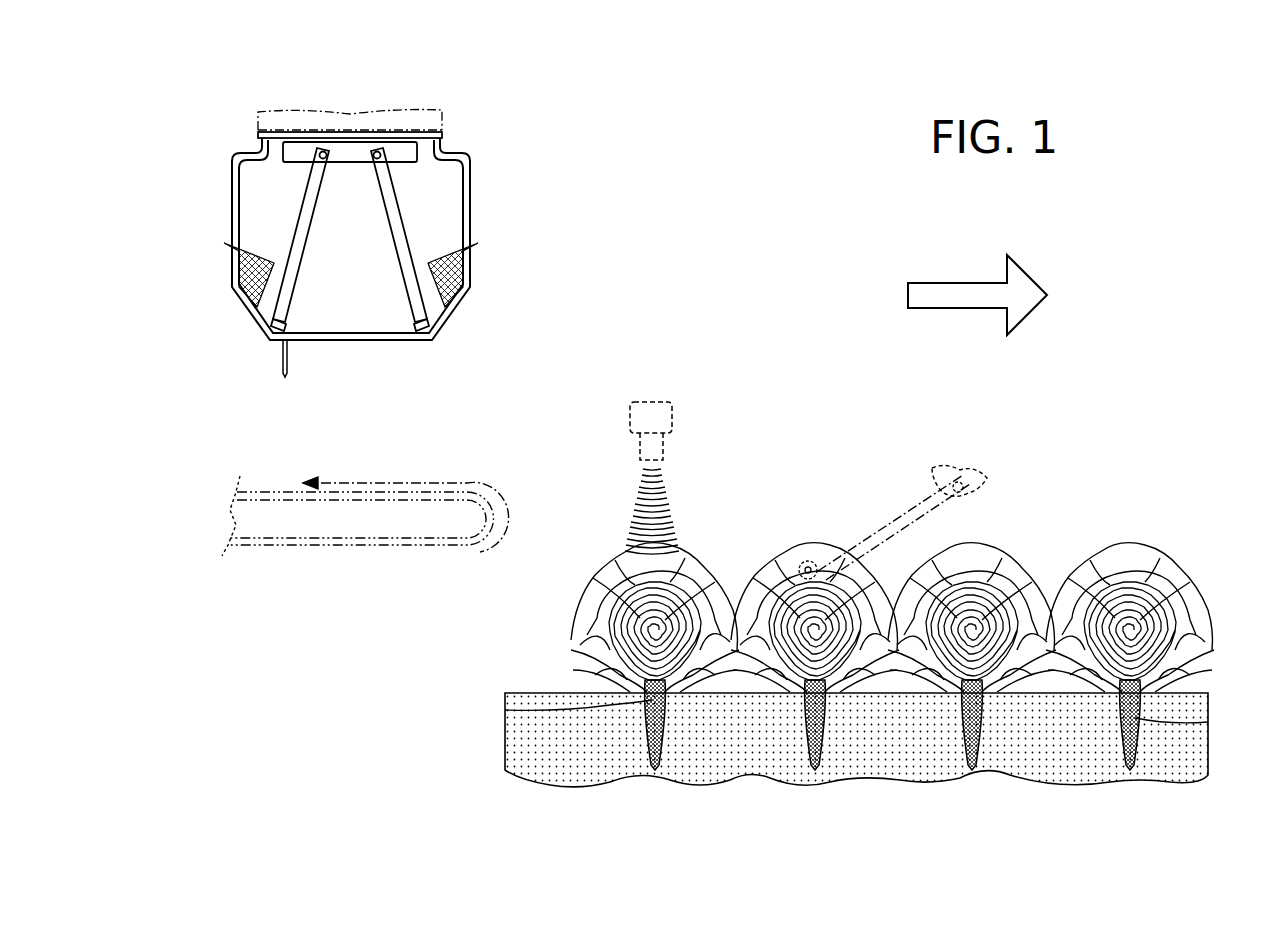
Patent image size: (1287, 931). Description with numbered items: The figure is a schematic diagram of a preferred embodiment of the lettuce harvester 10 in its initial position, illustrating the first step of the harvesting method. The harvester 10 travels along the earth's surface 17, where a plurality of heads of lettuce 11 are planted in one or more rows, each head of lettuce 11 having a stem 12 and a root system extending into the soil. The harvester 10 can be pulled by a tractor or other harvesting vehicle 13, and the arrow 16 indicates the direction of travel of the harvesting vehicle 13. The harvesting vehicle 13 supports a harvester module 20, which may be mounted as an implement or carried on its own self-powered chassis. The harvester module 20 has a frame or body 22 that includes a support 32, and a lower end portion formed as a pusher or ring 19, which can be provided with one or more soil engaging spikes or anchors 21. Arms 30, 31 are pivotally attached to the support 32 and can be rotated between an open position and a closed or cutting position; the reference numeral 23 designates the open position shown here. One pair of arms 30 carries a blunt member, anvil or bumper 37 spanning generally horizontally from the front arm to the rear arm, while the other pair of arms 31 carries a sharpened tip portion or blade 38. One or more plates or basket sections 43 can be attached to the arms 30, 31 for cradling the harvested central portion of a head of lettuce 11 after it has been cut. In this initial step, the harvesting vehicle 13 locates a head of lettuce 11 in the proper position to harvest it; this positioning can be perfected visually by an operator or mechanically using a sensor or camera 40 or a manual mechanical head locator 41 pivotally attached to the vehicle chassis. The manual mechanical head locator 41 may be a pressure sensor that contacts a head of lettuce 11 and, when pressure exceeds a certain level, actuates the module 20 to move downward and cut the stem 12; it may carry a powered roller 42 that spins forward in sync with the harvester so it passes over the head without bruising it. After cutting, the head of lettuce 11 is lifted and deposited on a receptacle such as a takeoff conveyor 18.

The lettuce harvester 10 is at (668, 172).
The head of lettuce 11 is at (700, 526).
The stem 12 is at (648, 712).
The harvesting vehicle 13 is at (312, 110).
The arrow 16 is at (968, 282).
The earth's surface 17 is at (560, 692).
The takeoff conveyor 18 is at (350, 527).
The pusher or ring 19 is at (402, 346).
The harvester module 20 is at (485, 166).
The soil engaging spike 21 is at (280, 357).
The frame or body 22 is at (231, 168).
The open position 23 is at (498, 268).
The arm 30 is at (293, 233).
The arm 31 is at (400, 224).
The support 32 is at (352, 150).
The blunt member, anvil or bumper 37 is at (282, 318).
The sharpened tip portion or blade 38 is at (420, 318).
The sensor or camera 40 is at (672, 425).
The manual mechanical head locator 41 is at (905, 508).
The powered roller 42 is at (808, 562).
The plate or basket section 43 is at (247, 268).